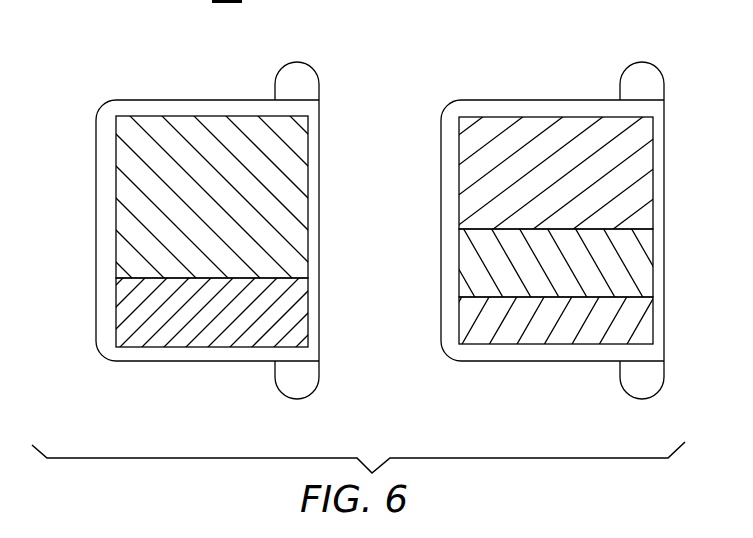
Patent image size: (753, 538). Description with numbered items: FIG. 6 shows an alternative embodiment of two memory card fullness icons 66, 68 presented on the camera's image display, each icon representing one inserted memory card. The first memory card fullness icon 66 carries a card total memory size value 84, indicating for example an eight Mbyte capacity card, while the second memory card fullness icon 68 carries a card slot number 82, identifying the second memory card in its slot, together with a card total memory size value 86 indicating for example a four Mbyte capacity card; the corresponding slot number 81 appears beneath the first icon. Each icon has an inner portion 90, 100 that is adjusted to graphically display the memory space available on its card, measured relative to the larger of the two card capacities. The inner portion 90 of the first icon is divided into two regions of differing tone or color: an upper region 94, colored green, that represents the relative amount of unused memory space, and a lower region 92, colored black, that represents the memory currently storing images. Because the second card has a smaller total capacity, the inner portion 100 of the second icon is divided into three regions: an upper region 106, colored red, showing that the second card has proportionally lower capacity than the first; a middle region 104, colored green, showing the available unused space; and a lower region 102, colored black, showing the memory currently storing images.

The first memory card fullness icon 66 is at (63, 146).
The second memory card fullness icon 68 is at (720, 146).
The card total memory size value 84 is at (141, 59).
The card total memory size value 86 is at (558, 60).
The upper region 94 is at (138, 226).
The inner portion 90 is at (116, 297).
The lower region 92 is at (133, 330).
The module number 1 81 is at (206, 394).
The card slot number 82 is at (545, 397).
The upper region 106 is at (478, 163).
The middle region 104 is at (478, 238).
The inner portion 100 is at (480, 271).
The lower region 102 is at (477, 327).